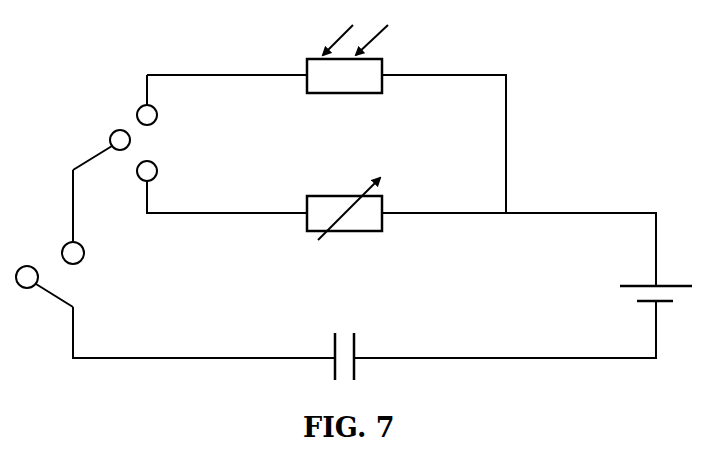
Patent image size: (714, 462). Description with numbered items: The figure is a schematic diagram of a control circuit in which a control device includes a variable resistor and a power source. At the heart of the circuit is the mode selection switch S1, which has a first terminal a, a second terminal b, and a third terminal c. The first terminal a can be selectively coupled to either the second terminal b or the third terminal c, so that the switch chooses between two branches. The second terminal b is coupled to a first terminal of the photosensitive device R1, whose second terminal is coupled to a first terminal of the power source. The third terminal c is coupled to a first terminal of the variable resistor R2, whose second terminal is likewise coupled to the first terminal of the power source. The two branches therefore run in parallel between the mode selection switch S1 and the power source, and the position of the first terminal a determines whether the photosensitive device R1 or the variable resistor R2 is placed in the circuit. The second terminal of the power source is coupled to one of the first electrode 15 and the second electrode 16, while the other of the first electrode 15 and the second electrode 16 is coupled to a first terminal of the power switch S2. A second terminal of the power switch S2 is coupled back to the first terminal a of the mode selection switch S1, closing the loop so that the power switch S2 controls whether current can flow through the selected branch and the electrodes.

The mode selection switch S1 is at (124, 136).
The first terminal a is at (101, 150).
The second terminal b is at (156, 111).
The third terminal c is at (155, 173).
The power switch S2 is at (49, 270).
The photosensitive device R1 is at (364, 64).
The variable resistor R2 is at (364, 209).
The first electrode 15 is at (342, 344).
The second electrode 16 is at (342, 344).